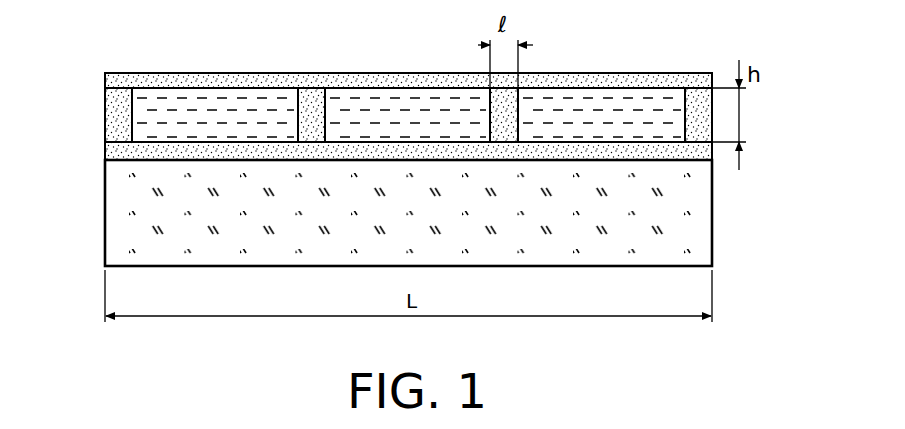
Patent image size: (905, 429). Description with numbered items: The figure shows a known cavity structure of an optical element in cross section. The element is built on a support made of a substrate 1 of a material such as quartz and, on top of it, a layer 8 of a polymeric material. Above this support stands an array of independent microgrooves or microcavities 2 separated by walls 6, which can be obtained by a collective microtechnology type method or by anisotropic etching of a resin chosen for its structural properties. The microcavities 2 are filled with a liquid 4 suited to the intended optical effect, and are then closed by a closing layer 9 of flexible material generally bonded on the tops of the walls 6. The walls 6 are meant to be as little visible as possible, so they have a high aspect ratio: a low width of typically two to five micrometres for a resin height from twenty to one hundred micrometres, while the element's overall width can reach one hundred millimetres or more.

The substrate 1 is at (692, 228).
The microcavities 2 is at (298, 105).
The liquid 4 is at (226, 130).
The walls 6 is at (118, 118).
The layer of polymeric material 8 is at (690, 152).
The closing layer 9 is at (632, 82).